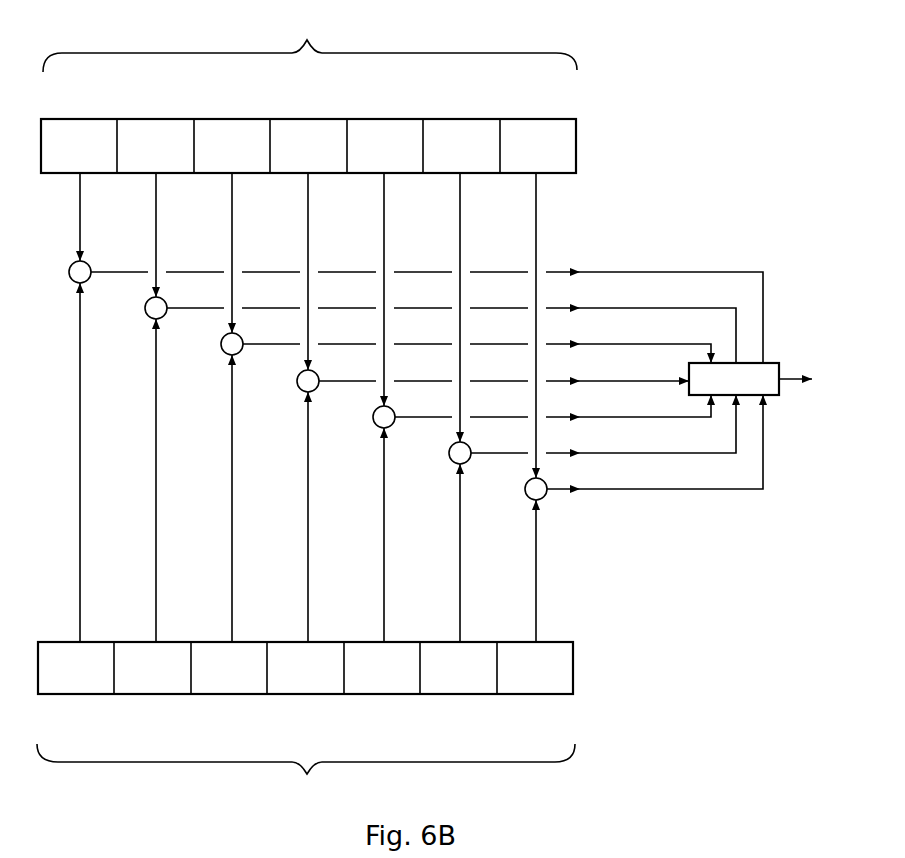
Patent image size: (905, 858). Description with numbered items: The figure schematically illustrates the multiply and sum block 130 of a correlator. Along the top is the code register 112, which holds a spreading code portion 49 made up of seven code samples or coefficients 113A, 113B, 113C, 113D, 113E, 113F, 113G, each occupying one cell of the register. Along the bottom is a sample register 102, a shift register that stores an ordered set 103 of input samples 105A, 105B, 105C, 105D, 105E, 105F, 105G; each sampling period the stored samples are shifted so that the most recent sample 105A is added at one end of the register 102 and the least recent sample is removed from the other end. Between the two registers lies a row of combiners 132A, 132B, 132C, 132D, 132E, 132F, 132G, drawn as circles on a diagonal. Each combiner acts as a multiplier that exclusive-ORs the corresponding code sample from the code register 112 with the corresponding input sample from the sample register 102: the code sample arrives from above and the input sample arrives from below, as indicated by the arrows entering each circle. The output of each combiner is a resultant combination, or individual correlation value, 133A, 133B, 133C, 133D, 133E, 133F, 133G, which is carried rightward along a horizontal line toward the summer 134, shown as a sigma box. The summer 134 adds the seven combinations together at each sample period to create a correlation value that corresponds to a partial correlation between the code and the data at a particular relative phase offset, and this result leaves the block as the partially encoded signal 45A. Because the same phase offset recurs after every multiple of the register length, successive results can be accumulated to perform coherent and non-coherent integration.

The spreading code portion 49 is at (310, 42).
The multiply and sum block 130 is at (734, 170).
The code register 112 is at (60, 174).
The sample register 102 is at (62, 641).
The set of input samples 103 is at (306, 778).
The code sample 113A is at (63, 132).
The code sample 113B is at (140, 132).
The code sample 113C is at (216, 132).
The code sample 113D is at (292, 132).
The code sample 113E is at (369, 132).
The code sample 113F is at (445, 132).
The code sample 113G is at (522, 132).
The input sample 105A is at (90, 683).
The input sample 105B is at (166, 683).
The input sample 105C is at (243, 683).
The input sample 105D is at (319, 683).
The input sample 105E is at (396, 683).
The input sample 105F is at (472, 683).
The input sample 105G is at (549, 683).
The combiner 132A is at (69, 272).
The combiner 132B is at (145, 308).
The combiner 132C is at (221, 344).
The combiner 132D is at (297, 381).
The combiner 132E is at (373, 417).
The combiner 132F is at (449, 453).
The combiner 132G is at (525, 489).
The resultant combination 133A is at (605, 272).
The resultant combination 133B is at (605, 308).
The resultant combination 133C is at (605, 344).
The resultant combination 133D is at (590, 381).
The resultant combination 133E is at (590, 417).
The resultant combination 133F is at (605, 453).
The resultant combination 133G is at (605, 489).
The summer 134 is at (775, 362).
The partially encoded signal 45A is at (793, 382).